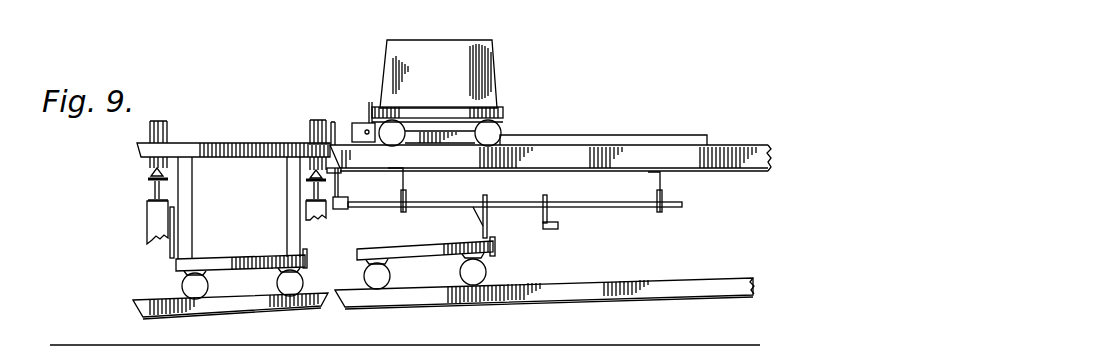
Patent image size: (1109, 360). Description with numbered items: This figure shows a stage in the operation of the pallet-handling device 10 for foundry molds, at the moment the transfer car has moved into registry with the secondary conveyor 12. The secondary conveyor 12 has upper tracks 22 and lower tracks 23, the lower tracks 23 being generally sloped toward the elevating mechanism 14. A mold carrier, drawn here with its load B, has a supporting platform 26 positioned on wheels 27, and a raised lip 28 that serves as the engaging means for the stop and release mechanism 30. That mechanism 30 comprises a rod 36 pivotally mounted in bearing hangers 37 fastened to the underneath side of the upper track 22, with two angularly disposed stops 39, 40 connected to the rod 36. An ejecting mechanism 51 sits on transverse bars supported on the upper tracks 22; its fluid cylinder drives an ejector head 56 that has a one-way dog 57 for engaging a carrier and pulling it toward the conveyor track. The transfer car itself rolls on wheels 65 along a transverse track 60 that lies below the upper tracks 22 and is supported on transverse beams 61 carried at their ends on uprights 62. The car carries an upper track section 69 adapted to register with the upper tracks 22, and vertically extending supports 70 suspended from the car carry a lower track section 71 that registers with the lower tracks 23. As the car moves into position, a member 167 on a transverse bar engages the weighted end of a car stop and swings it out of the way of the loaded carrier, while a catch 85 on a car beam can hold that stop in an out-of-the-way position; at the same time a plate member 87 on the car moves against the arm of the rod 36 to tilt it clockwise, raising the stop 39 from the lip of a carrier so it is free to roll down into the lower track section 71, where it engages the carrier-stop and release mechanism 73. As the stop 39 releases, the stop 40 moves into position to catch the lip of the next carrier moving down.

The bale or load B is at (483, 60).
The pallet-handling device 10 is at (732, 122).
The secondary conveyor 12 is at (627, 122).
The elevating mechanism 14 is at (152, 257).
The upper tracks 22 is at (742, 164).
The lower tracks 23 is at (703, 290).
The supporting platform 26 is at (413, 250).
The wheels 27 is at (380, 290).
The raised lip 28 is at (505, 115).
The stop and release mechanism 30 is at (573, 196).
The rod 36 is at (605, 202).
The bearing hangers 37 is at (408, 190).
The stop 39 is at (490, 230).
The stop 40 is at (560, 226).
The ejecting mechanism 51 is at (532, 131).
The ejector head 56 is at (362, 142).
The one-way dog 57 is at (368, 102).
The track 60 is at (148, 178).
The transverse beams 61 is at (147, 208).
The uprights 62 is at (147, 238).
The wheels 65 is at (170, 128).
The upper track section 69 is at (236, 140).
The vertically extending supports 70 is at (191, 232).
The lower track section 71 is at (235, 305).
The carrier-stop and release mechanism 73 is at (167, 264).
The catch 85 is at (326, 120).
The plate member 87 is at (336, 125).
The member 167 is at (341, 178).